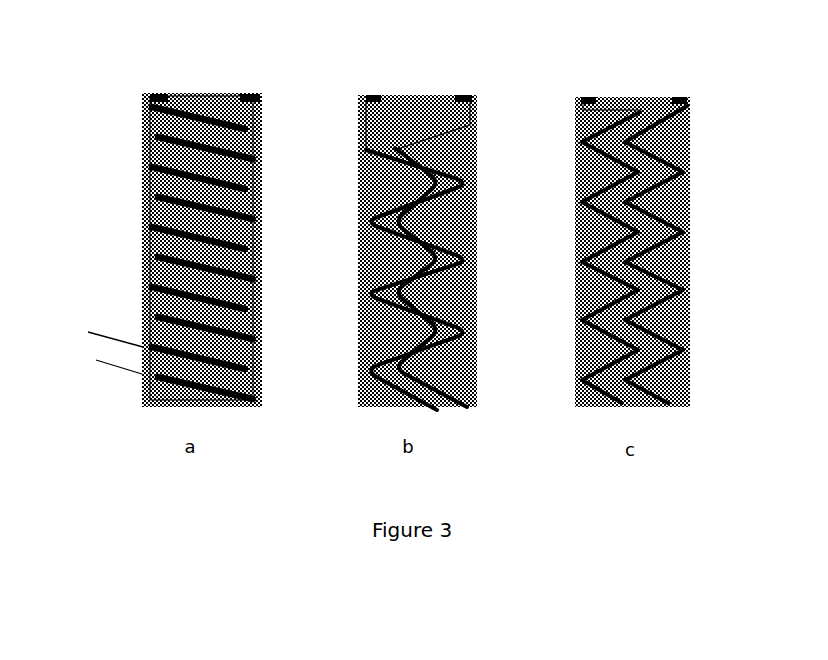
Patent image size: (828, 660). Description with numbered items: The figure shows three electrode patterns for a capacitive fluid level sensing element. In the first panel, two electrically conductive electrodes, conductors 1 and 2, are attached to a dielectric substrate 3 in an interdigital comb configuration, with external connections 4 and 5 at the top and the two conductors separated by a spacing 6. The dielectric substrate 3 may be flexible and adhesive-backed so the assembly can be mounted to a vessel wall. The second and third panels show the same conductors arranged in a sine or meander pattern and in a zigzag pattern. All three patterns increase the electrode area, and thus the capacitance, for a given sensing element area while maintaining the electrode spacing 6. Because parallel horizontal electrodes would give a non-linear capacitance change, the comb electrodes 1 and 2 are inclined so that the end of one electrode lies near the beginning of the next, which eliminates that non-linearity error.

The conductor 1 is at (167, 178).
The conductor 2 is at (240, 273).
The dielectric substrate 3 is at (263, 190).
The connection 4 is at (165, 92).
The connection 5 is at (246, 92).
The spacing 6 is at (103, 302).